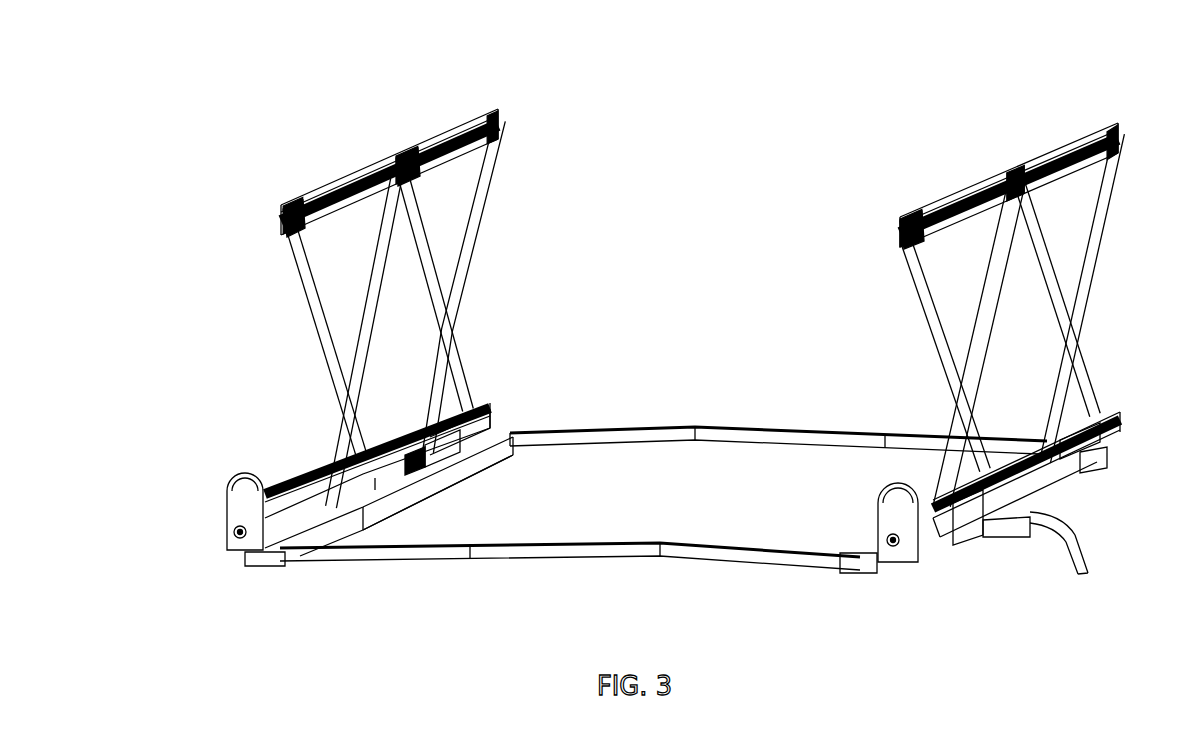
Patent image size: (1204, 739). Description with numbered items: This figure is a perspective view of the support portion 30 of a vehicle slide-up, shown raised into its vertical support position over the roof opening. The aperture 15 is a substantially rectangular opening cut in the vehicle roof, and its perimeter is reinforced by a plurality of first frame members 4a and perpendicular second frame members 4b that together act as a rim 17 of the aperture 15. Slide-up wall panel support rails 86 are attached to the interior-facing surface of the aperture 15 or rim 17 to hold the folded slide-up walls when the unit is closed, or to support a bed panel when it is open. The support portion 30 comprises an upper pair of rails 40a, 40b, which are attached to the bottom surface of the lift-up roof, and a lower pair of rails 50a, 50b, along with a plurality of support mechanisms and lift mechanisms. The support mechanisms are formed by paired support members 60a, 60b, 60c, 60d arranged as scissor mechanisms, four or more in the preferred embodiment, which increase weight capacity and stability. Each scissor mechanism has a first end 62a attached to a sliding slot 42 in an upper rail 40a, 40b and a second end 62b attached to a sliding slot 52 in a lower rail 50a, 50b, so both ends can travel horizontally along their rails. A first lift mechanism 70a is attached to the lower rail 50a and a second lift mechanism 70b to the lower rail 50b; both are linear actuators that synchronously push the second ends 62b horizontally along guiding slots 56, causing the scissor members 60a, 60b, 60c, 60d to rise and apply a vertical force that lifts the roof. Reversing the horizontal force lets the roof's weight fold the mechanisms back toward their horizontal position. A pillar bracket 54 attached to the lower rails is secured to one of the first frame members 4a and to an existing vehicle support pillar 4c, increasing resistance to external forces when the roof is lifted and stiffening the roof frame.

The first frame member 4a is at (493, 558).
The second frame member 4b is at (256, 572).
The vehicle support pillar 4c is at (1087, 575).
The aperture 15 is at (489, 505).
The rim 17 is at (737, 430).
The support portion 30 is at (652, 398).
The upper rail 40a is at (1095, 120).
The upper rail 40b is at (493, 105).
The sliding slot 42 is at (403, 157).
The single lower rail 50a is at (1026, 474).
The second single lower rail 50b is at (302, 483).
The sliding slot 52 is at (1072, 487).
The pillar bracket 54 is at (1006, 540).
The guiding slot 56 is at (410, 432).
The paired support member 60a is at (930, 322).
The paired support member 60b is at (1082, 380).
The paired support member 60c is at (322, 362).
The paired support member 60d is at (484, 243).
The first end 62a is at (900, 227).
The second end 62b is at (948, 505).
The first lift mechanism 70a is at (927, 527).
The second lift mechanism 70b is at (244, 473).
The slide-up wall panel support rail 86 is at (510, 432).